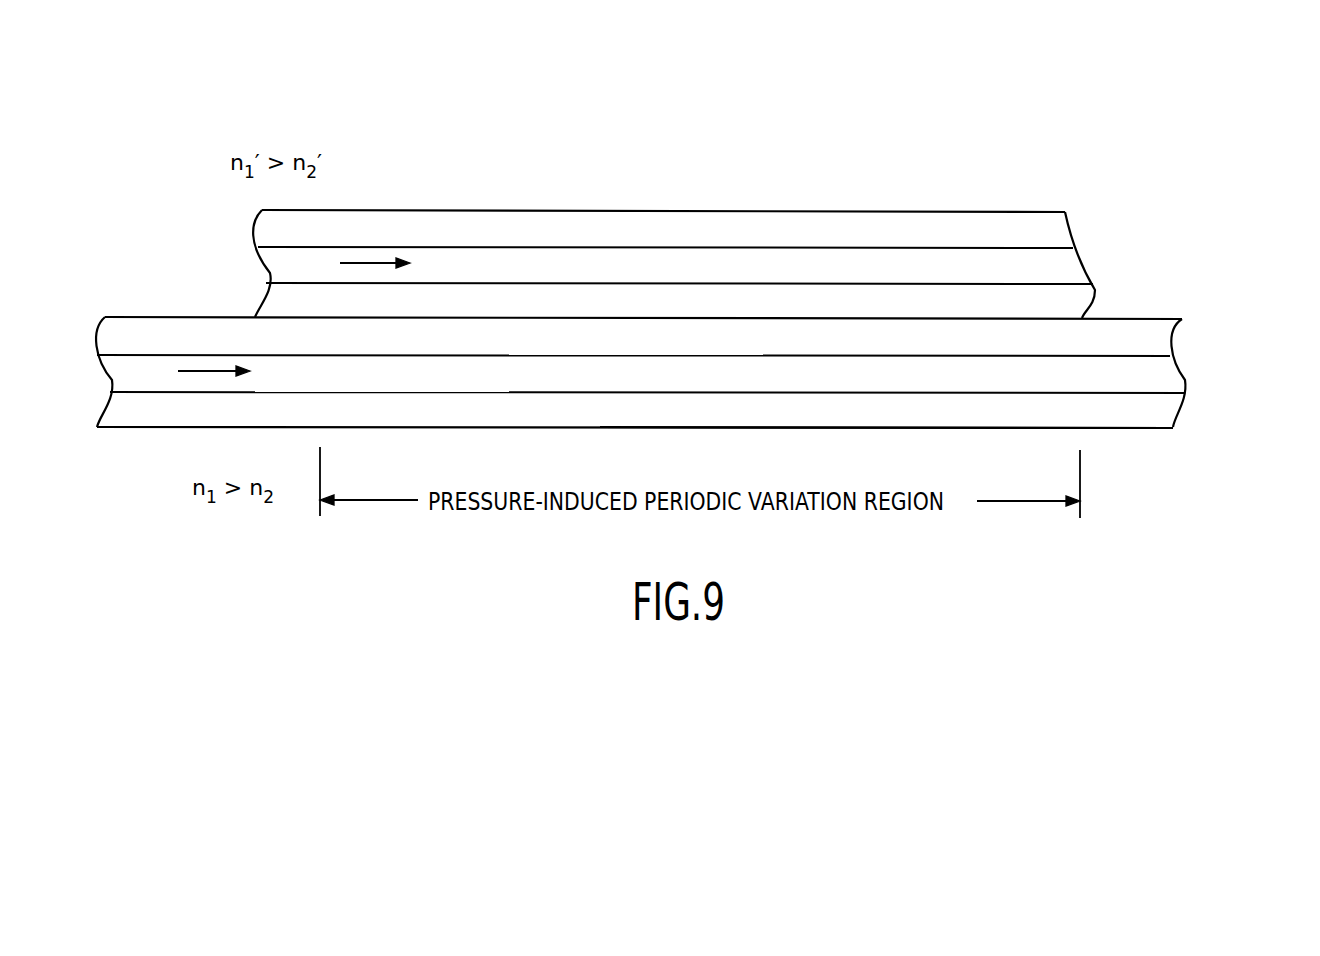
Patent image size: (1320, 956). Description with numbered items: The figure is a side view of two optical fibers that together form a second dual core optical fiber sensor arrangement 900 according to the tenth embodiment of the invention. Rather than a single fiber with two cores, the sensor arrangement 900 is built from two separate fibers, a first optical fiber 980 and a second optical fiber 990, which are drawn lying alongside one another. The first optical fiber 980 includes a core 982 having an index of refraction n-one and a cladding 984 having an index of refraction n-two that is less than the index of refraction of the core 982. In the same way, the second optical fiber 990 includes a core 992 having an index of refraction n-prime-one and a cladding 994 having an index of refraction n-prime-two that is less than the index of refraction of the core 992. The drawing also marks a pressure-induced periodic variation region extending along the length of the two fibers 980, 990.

The dual core optical fiber sensor arrangement 900 is at (778, 173).
The second optical fiber 990 is at (1055, 202).
The core 992 is at (977, 265).
The cladding 994 is at (922, 227).
The first optical fiber 980 is at (1168, 437).
The core 982 is at (1130, 378).
The cladding 984 is at (1105, 420).